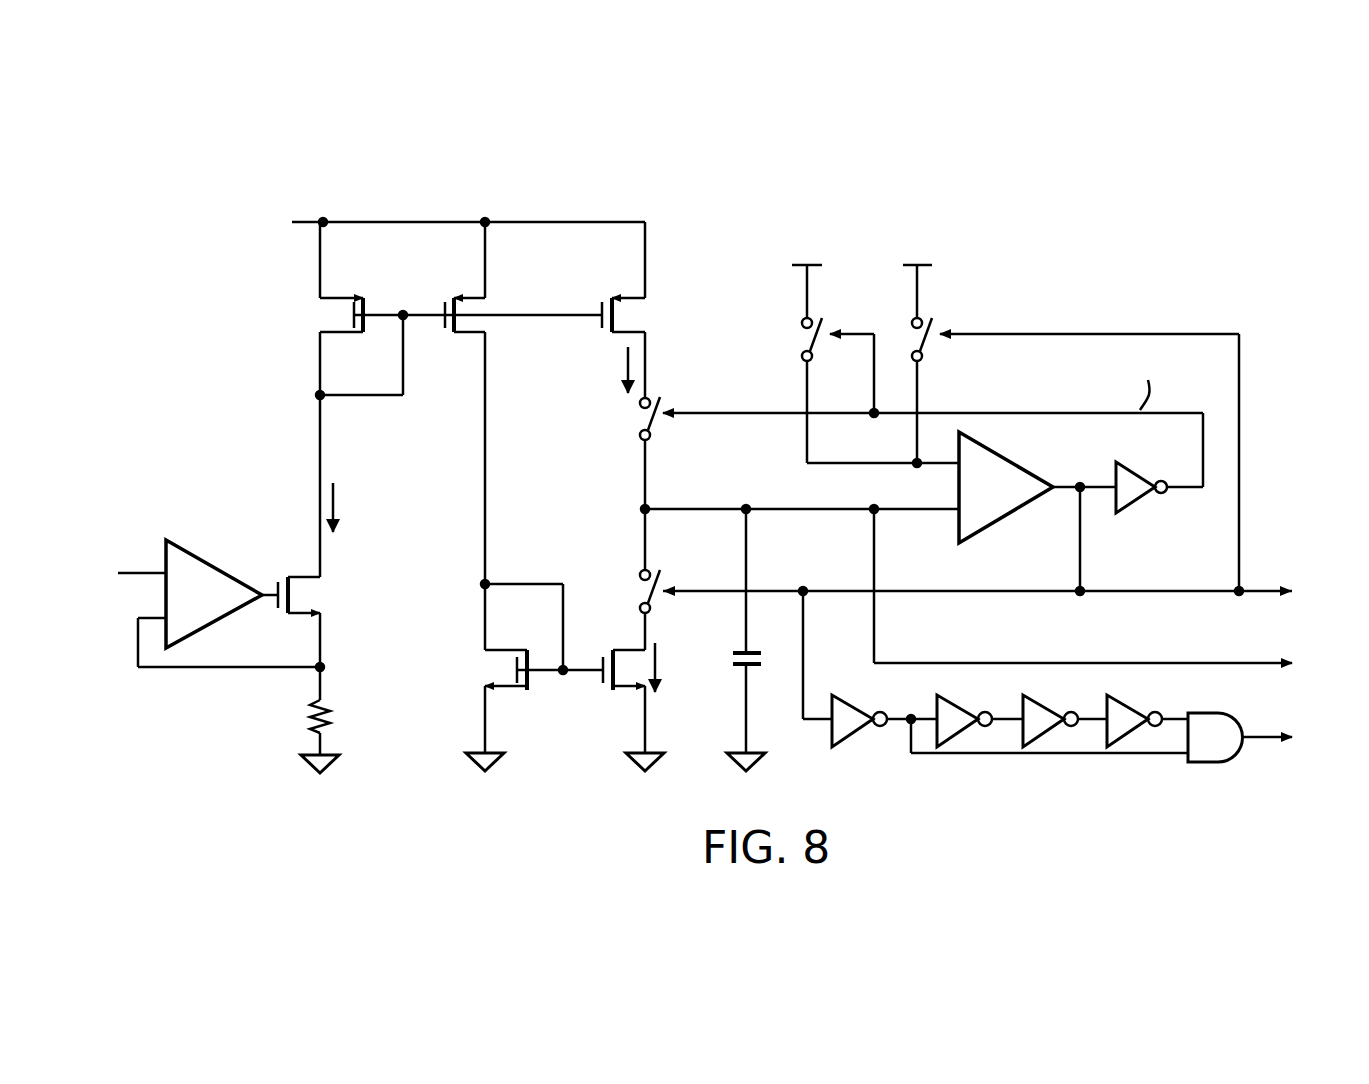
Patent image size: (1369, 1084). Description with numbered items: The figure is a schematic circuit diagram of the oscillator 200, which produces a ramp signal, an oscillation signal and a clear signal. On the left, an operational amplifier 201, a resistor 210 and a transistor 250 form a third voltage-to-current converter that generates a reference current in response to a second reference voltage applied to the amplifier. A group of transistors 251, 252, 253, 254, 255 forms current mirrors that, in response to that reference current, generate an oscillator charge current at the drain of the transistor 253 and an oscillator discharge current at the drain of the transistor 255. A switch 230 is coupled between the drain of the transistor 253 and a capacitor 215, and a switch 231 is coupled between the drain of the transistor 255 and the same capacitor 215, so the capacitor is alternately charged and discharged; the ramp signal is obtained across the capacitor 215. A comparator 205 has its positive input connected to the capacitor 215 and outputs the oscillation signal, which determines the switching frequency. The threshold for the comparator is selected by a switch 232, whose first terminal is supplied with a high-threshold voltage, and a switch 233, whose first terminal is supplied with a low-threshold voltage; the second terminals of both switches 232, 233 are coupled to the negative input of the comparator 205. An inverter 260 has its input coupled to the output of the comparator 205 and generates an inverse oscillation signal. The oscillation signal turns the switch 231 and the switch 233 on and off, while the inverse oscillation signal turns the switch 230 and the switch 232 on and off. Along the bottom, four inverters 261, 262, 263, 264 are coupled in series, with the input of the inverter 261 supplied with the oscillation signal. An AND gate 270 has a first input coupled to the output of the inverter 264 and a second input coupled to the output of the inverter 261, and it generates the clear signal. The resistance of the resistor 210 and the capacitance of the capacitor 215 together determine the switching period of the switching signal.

The oscillator 200 is at (1232, 235).
The operational amplifier 201 is at (190, 540).
The comparator 205 is at (998, 524).
The resistor 210 is at (340, 716).
The capacitor 215 is at (737, 672).
The switch 230 is at (636, 418).
The switch 231 is at (637, 592).
The switch 232 is at (797, 343).
The switch 233 is at (933, 348).
The transistor 250 is at (320, 596).
The transistor 251 is at (328, 315).
The transistor 252 is at (450, 340).
The transistor 253 is at (650, 318).
The transistor 254 is at (487, 672).
The transistor 255 is at (606, 696).
The inverter 260 is at (1135, 505).
The inverter 261 is at (852, 740).
The inverter 262 is at (957, 740).
The inverter 263 is at (1042, 740).
The inverter 264 is at (1128, 740).
The AND gate 270 is at (1212, 765).